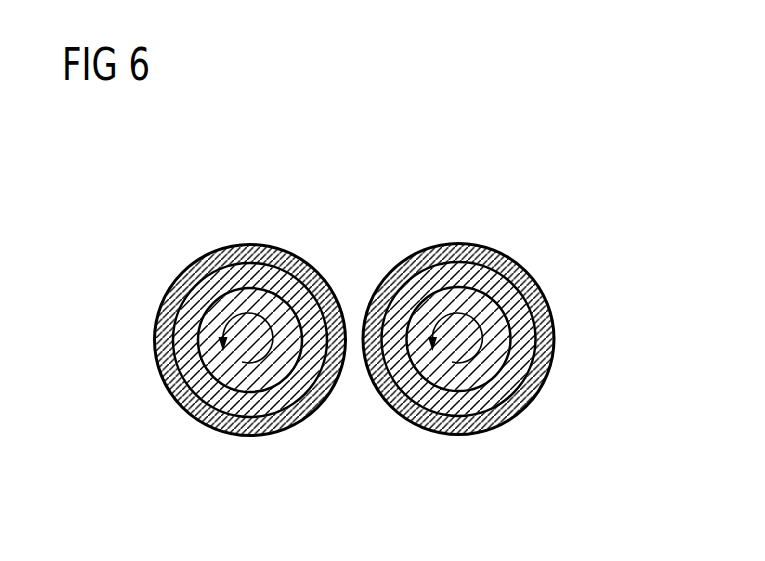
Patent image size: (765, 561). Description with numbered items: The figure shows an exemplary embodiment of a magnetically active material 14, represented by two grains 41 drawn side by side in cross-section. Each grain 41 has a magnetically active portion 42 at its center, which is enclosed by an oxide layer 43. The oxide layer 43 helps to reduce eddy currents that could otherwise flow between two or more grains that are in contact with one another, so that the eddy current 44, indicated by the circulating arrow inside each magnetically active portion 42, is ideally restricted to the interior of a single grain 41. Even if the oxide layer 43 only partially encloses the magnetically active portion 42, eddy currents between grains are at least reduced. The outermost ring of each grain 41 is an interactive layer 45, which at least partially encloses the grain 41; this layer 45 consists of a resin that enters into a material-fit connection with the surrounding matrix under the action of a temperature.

The magnetically active material 14 is at (371, 203).
The grain 41 is at (155, 262).
The magnetically active portion 42 is at (270, 300).
The oxide layer 43 is at (250, 273).
The eddy current 44 is at (192, 278).
The interactive layer 45 is at (163, 307).